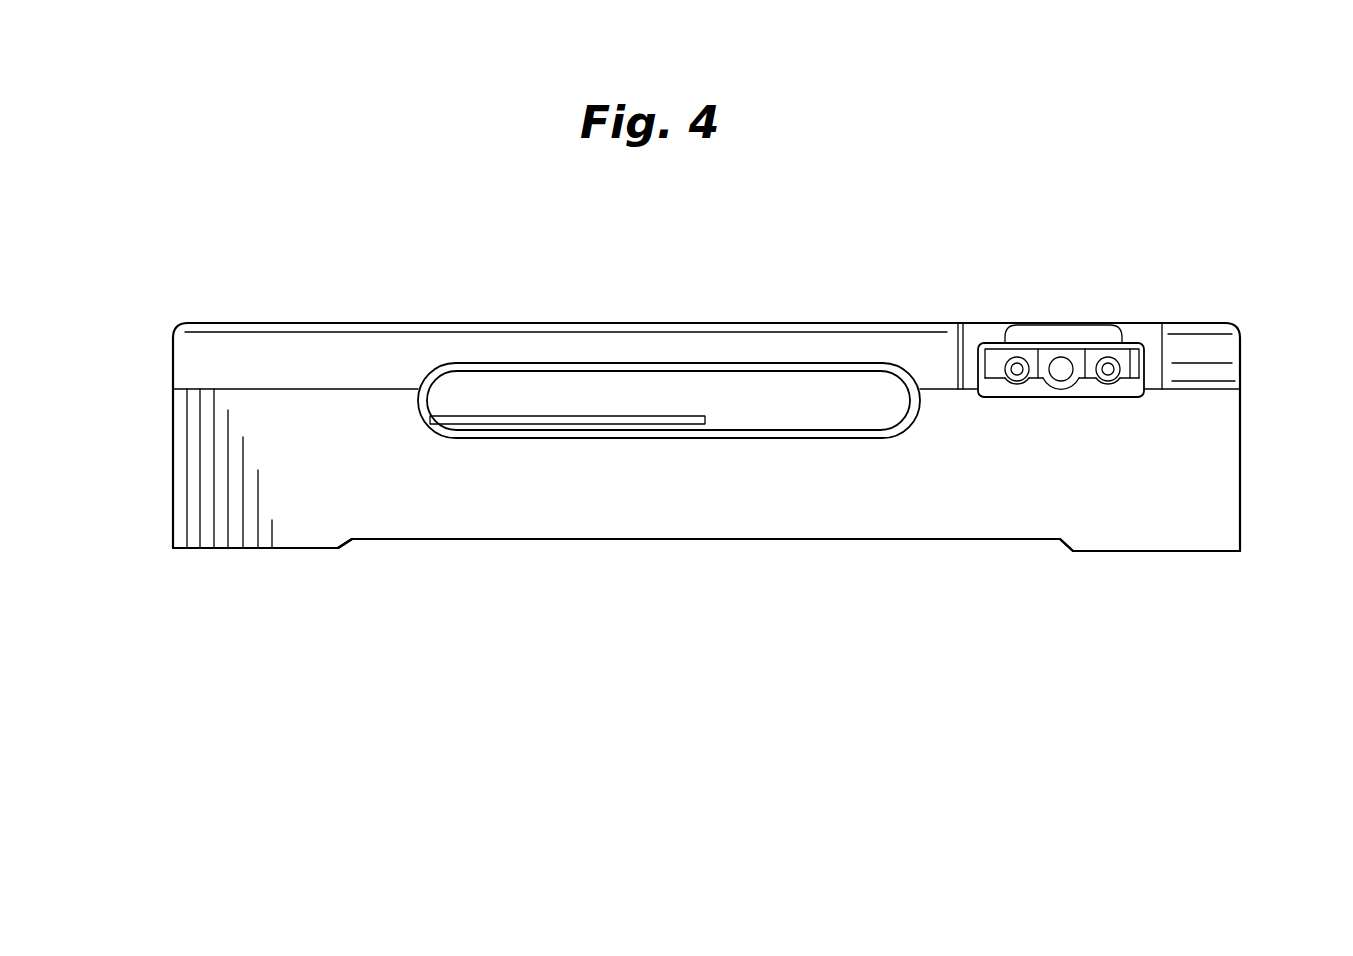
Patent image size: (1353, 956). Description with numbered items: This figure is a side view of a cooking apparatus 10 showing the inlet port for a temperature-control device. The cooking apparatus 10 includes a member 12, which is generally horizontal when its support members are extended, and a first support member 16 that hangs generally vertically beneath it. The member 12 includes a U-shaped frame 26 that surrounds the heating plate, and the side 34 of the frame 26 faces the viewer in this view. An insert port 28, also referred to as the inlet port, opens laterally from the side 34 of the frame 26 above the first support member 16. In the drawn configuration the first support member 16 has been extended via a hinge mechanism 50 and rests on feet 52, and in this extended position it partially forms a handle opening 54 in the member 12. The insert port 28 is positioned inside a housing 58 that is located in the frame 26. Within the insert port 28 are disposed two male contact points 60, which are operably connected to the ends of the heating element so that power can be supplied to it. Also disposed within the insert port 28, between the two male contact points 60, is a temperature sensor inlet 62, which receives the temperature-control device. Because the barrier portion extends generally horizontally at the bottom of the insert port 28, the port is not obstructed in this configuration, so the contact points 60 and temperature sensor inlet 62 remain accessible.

The cooking apparatus 10 is at (820, 209).
The member 12 is at (327, 314).
The first support member 16 is at (170, 463).
The U-shaped frame 26 is at (691, 324).
The insert port 28 is at (1082, 349).
The side 34 is at (205, 354).
The hinge mechanism 50 is at (1248, 405).
The feet 52 is at (236, 538).
The handle opening 54 is at (568, 388).
The housing 58 is at (970, 325).
The male contact points 60 is at (1022, 357).
The temperature sensor inlet 62 is at (1060, 357).